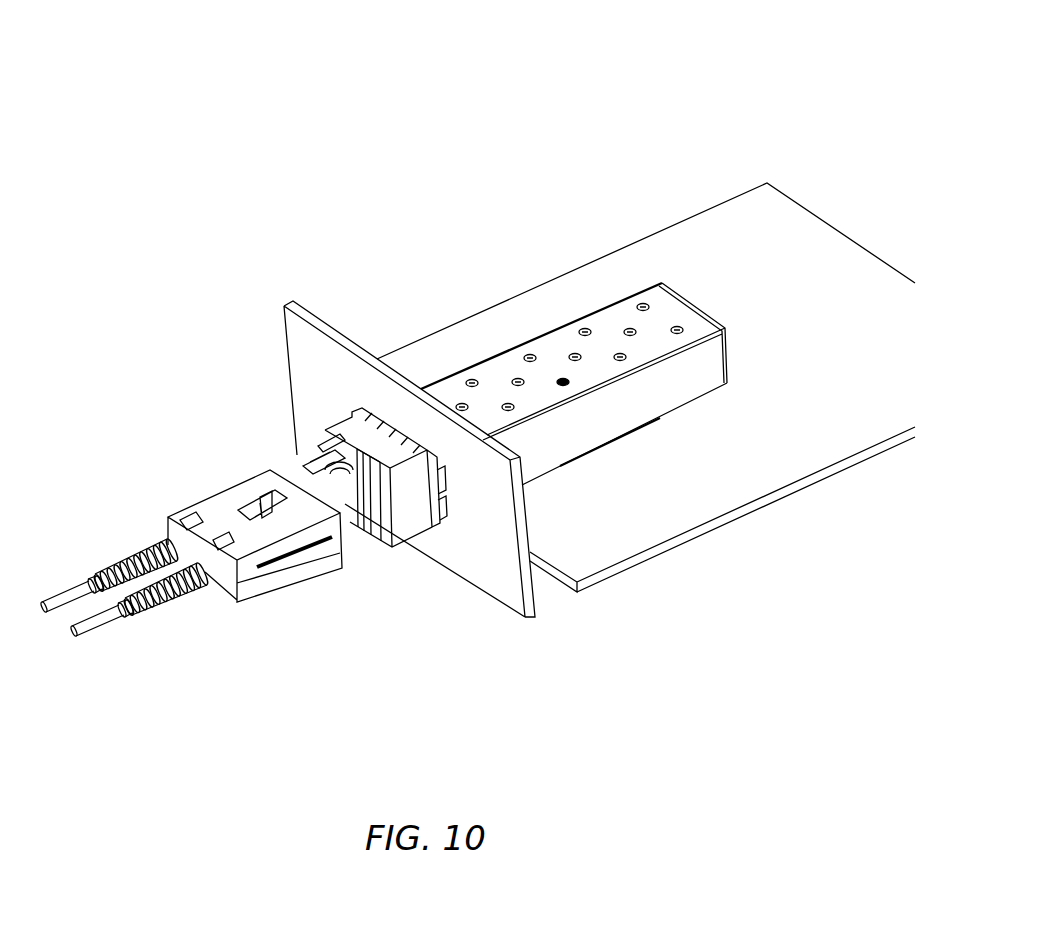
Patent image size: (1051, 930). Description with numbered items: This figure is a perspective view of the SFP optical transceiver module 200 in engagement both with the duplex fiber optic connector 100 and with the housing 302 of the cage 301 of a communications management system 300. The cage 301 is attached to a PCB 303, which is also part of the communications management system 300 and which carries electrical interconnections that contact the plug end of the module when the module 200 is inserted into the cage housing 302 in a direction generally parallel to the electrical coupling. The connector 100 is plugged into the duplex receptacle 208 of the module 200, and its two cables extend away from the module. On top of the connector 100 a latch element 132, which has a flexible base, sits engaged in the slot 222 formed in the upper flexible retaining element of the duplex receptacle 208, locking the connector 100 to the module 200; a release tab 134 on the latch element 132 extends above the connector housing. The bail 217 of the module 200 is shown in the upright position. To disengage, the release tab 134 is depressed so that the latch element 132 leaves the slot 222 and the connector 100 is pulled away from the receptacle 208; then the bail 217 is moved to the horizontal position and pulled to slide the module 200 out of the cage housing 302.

The duplex fiber optic connector 100 is at (191, 530).
The latch element 132 is at (343, 477).
The release tab 134 is at (253, 491).
The SFP optical transceiver module 200 is at (310, 488).
The duplex receptacle 208 is at (400, 528).
The bail 217 is at (317, 445).
The slot 222 is at (303, 465).
The communications management system 300 is at (348, 195).
The cage 301 is at (542, 306).
The housing 302 is at (622, 423).
The PCB 303 is at (772, 227).